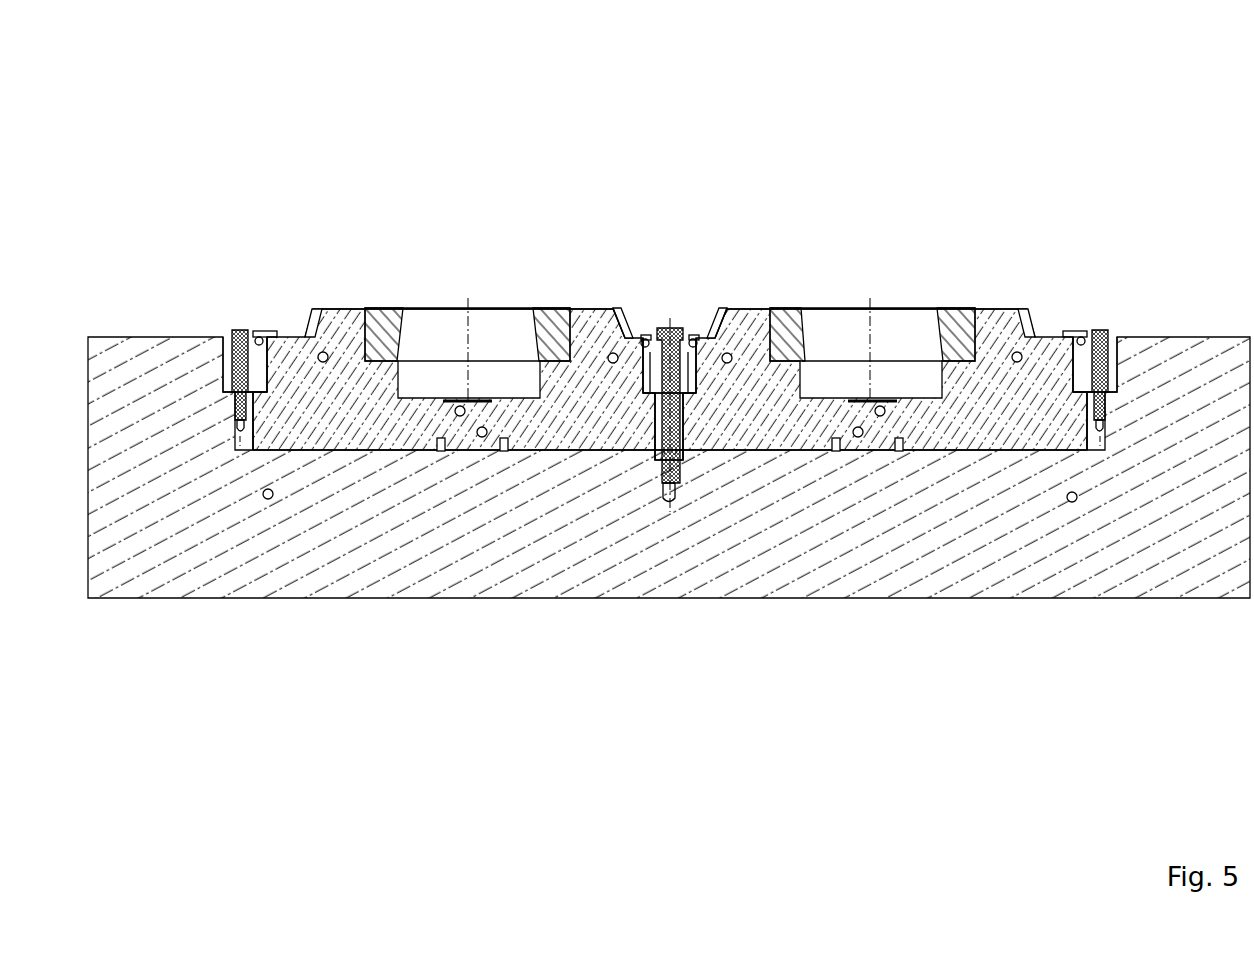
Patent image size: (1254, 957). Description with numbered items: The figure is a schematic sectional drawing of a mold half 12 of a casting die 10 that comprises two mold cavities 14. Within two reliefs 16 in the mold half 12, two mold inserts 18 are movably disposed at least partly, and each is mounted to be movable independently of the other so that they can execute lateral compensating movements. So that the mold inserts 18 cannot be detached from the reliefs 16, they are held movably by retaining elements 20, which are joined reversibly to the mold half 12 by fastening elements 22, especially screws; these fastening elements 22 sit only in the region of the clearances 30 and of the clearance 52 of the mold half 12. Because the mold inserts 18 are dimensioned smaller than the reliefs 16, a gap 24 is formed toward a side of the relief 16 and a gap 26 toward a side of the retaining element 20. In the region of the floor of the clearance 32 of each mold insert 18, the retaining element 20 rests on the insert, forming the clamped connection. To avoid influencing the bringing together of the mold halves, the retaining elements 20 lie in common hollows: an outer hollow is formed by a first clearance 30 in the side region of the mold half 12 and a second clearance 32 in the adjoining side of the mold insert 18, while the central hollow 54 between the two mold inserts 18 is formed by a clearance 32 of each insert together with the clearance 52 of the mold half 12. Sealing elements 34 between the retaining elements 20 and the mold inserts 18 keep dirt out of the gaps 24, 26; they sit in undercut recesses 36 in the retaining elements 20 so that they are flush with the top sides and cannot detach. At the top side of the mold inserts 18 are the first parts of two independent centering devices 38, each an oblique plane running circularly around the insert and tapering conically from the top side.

The casting die 10 is at (138, 163).
The mold half 12 is at (645, 560).
The mold cavity 14 is at (467, 252).
The relief 16 is at (250, 455).
The mold insert 18 is at (413, 419).
The retaining element 20 is at (246, 349).
The fastening element 22 is at (236, 331).
The gap 24 is at (258, 418).
The gap 26 is at (640, 368).
The first clearance 30 is at (222, 394).
The second clearance 32 is at (277, 402).
The sealing element 34 is at (261, 331).
The recess 36 is at (250, 357).
The centering device 38 is at (301, 316).
The clearance 52 is at (699, 340).
The hollow 54 is at (636, 333).